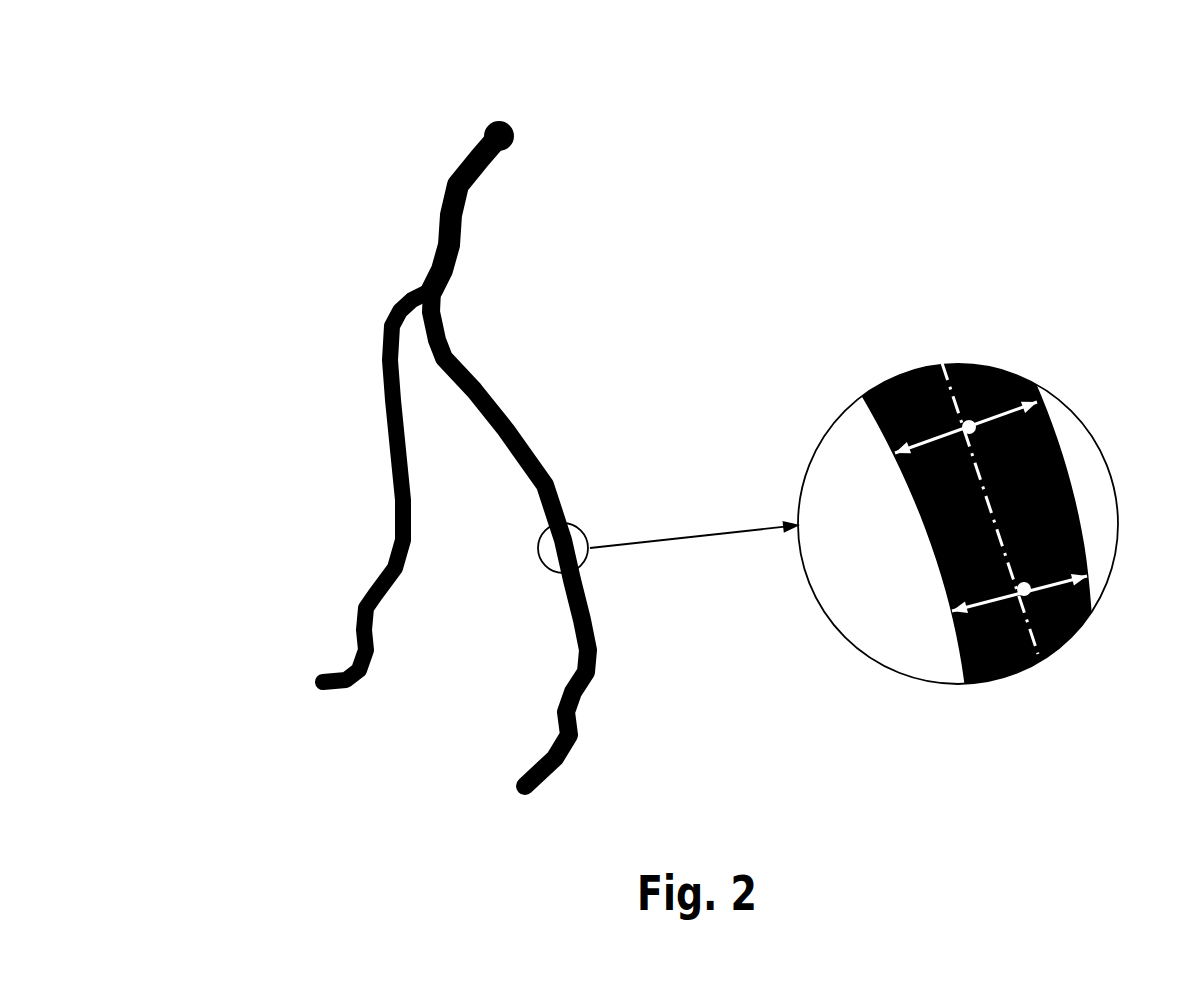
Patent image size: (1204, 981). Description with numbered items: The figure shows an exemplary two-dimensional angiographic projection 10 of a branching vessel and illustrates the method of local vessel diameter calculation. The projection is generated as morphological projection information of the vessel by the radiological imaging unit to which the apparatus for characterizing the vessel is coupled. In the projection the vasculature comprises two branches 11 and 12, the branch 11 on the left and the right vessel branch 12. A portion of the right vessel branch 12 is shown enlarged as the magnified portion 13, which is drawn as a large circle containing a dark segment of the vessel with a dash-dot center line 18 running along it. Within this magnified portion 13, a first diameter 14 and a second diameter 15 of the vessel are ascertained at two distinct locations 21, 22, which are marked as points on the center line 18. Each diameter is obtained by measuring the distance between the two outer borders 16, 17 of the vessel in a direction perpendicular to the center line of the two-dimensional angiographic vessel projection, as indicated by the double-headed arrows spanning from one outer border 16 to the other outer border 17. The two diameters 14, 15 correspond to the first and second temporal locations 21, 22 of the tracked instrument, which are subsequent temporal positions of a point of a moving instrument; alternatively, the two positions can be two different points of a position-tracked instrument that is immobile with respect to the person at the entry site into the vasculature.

The two-dimensional angiographic projection 10 is at (438, 122).
The vessel branch 11 is at (390, 460).
The right vessel branch 12 is at (488, 405).
The magnified portion 13 is at (582, 533).
The first diameter 14 is at (1052, 578).
The second diameter 15 is at (1042, 414).
The outer border 16 is at (957, 662).
The outer border 17 is at (1089, 592).
The vessel centerline 18 is at (957, 393).
The first location 21 is at (1024, 589).
The second location 22 is at (968, 427).